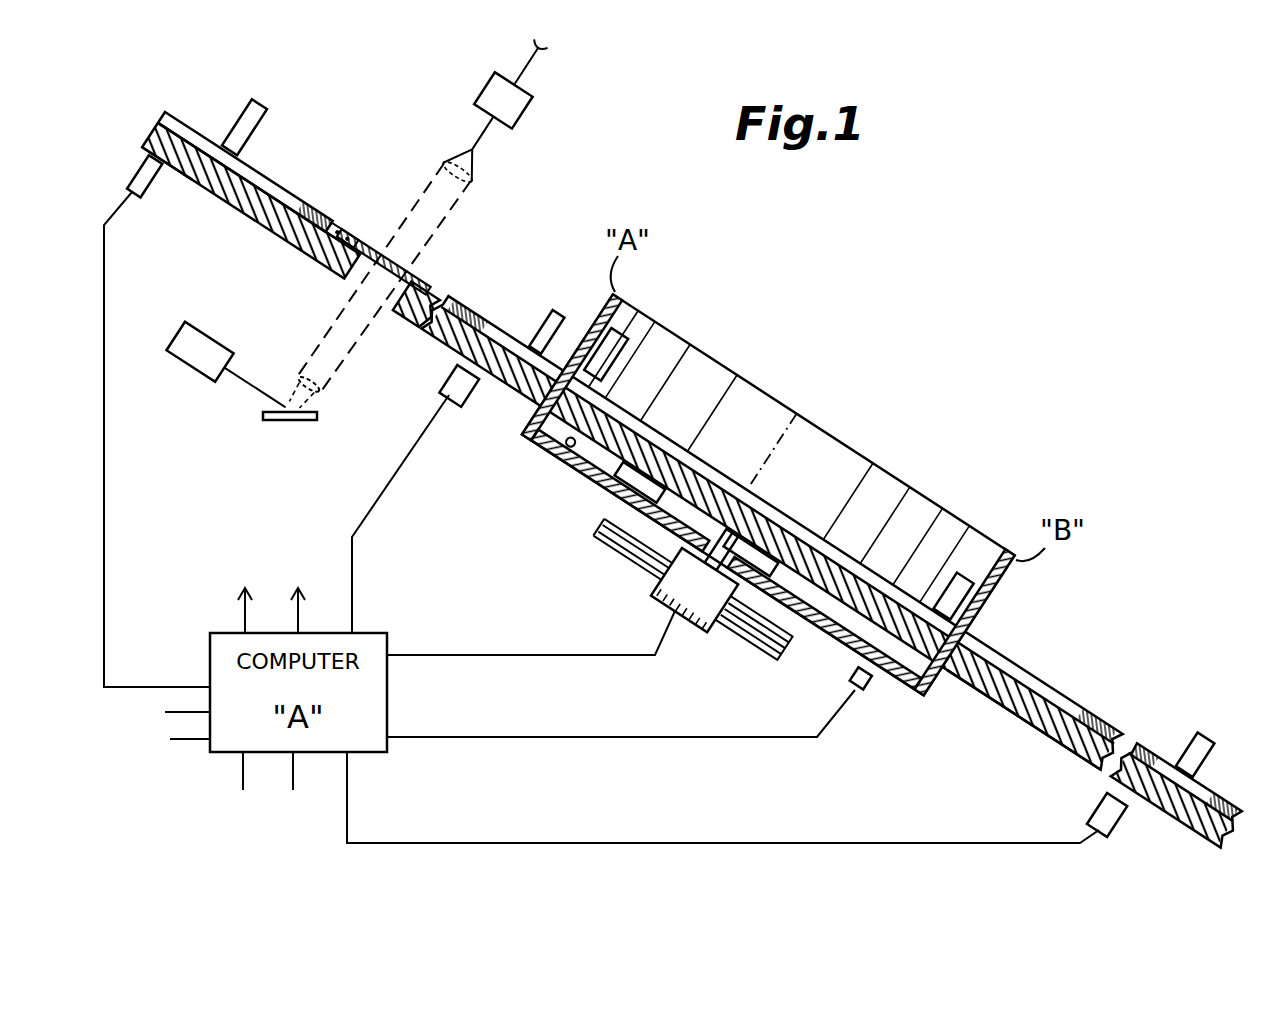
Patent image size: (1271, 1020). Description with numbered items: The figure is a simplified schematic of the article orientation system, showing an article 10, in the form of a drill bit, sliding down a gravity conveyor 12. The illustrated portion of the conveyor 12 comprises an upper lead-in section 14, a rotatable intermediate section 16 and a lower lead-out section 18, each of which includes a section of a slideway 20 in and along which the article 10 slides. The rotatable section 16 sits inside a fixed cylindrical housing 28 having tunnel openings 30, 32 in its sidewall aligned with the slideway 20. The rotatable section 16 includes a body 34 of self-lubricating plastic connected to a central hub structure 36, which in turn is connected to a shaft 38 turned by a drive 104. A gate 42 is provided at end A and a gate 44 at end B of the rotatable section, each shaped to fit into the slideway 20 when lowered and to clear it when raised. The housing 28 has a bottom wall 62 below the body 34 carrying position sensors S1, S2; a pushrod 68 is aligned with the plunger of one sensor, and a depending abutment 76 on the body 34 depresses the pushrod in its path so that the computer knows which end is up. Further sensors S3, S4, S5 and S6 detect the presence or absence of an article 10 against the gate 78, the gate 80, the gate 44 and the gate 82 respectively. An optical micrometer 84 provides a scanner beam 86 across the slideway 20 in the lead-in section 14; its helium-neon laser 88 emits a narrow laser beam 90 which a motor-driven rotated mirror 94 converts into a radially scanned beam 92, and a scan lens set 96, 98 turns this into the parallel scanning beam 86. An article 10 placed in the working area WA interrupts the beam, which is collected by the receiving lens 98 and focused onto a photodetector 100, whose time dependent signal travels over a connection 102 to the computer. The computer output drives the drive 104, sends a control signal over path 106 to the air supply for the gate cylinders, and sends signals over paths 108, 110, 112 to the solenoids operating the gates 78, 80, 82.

The article 10 is at (385, 258).
The gravity conveyor 12 is at (258, 228).
The upper lead-in section 14 is at (205, 194).
The rotatable intermediate section 16 is at (545, 452).
The lower lead-out section 18 is at (987, 700).
The slideway 20 is at (288, 196).
The cylindrical housing 28 is at (722, 373).
The tunnel opening 30 is at (525, 400).
The tunnel opening 32 is at (985, 690).
The body 34 is at (862, 595).
The central hub structure 36 is at (603, 545).
The shaft 38 is at (740, 640).
The gate 42 is at (616, 362).
The gate 44 is at (948, 598).
The bottom wall 62 is at (620, 505).
The pushrod 68 is at (565, 447).
The depending abutment 76 is at (843, 644).
The gate 78 is at (250, 103).
The gate 80 is at (548, 320).
The gate 82 is at (1205, 738).
The optical micrometer 84 is at (490, 170).
The scanner beam 86 is at (452, 214).
The helium-neon laser 88 is at (180, 362).
The laser beam 90 is at (250, 390).
The radially scanned beam 92 is at (303, 376).
The rotated mirror 94 is at (290, 422).
The scan lens 96 is at (318, 386).
The receiving lens 98 is at (455, 155).
The photodetector 100 is at (482, 88).
The connection 102 is at (545, 56).
The drive 104 is at (685, 622).
The path 106 is at (293, 792).
The path 108 is at (240, 790).
The path 110 is at (172, 742).
The path 112 is at (162, 712).
The position sensor S1 is at (243, 592).
The position sensor S2 is at (300, 592).
The position sensor S3 is at (140, 152).
The position sensor S4 is at (445, 381).
The position sensor S5 is at (850, 681).
The position sensor S6 is at (1093, 808).
The working area WA is at (414, 263).